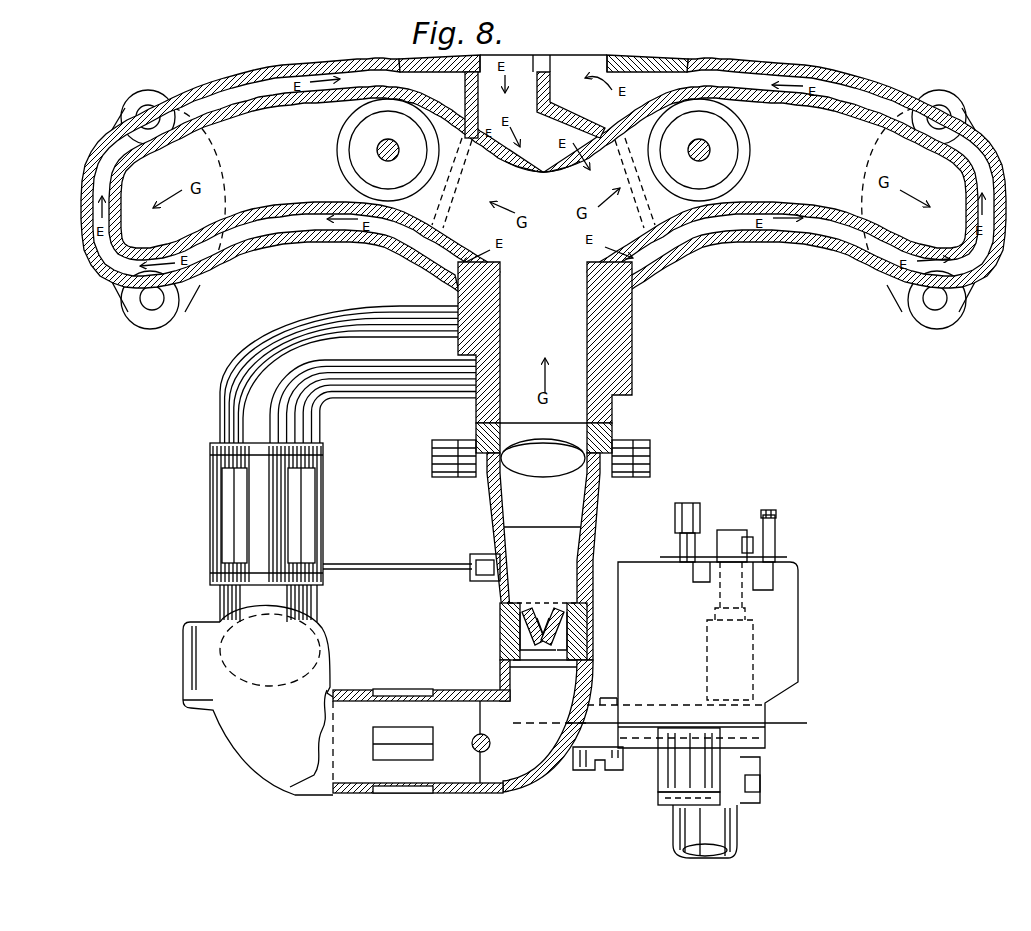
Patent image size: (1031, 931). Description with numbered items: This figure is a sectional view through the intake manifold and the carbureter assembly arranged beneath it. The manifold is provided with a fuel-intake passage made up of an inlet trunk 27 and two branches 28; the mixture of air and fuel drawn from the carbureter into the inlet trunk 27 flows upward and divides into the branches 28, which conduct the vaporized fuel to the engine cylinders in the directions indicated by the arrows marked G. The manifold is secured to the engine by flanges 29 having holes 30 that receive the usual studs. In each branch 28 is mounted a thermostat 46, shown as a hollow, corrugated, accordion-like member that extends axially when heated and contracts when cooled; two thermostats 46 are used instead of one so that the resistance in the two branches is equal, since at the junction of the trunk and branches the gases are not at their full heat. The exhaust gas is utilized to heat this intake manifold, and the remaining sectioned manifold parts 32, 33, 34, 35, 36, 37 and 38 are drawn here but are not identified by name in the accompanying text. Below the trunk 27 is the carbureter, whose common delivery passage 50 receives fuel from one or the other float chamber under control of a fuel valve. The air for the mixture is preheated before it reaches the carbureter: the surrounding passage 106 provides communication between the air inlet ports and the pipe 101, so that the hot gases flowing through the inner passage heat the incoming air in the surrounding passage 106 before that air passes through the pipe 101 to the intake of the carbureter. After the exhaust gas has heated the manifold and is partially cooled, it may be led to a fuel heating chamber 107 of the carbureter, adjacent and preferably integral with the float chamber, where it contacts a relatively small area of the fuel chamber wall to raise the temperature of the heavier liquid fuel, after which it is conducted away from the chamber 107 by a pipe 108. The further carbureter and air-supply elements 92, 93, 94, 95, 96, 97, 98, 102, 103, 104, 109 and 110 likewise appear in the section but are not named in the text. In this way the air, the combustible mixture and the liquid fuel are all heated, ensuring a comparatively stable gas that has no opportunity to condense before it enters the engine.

The inlet trunk 27 is at (580, 363).
The branches 28 is at (274, 100).
The flanges 29 is at (162, 96).
The holes 30 is at (142, 108).
The partition wall 32 is at (474, 92).
The exhaust passage wall 33 is at (362, 78).
The baffle wall 34 is at (575, 127).
The hot spot chamber wall 35 is at (532, 168).
The exhaust flange 36 is at (612, 60).
The exhaust inlet opening 37 is at (497, 58).
The exhaust outlet opening 38 is at (577, 63).
The thermostats 46 is at (354, 148).
The common delivery passage 50 is at (670, 714).
The venturi 92 is at (503, 646).
The venturi insert 93 is at (510, 622).
The fuel nozzle 94 is at (545, 614).
The elbow 95 is at (540, 760).
The mixing chamber wall 96 is at (520, 586).
The throttle valve 97 is at (552, 470).
The flange joint 98 is at (482, 478).
The pipe 101 is at (374, 324).
The valve 102 is at (403, 735).
The air pipe 103 is at (357, 695).
The pipe clamp 104 is at (413, 686).
The surrounding passage 106 is at (324, 537).
The fuel heating chamber 107 is at (222, 516).
The pipe 108 is at (738, 828).
The control rod 109 is at (413, 563).
The lever 110 is at (488, 563).